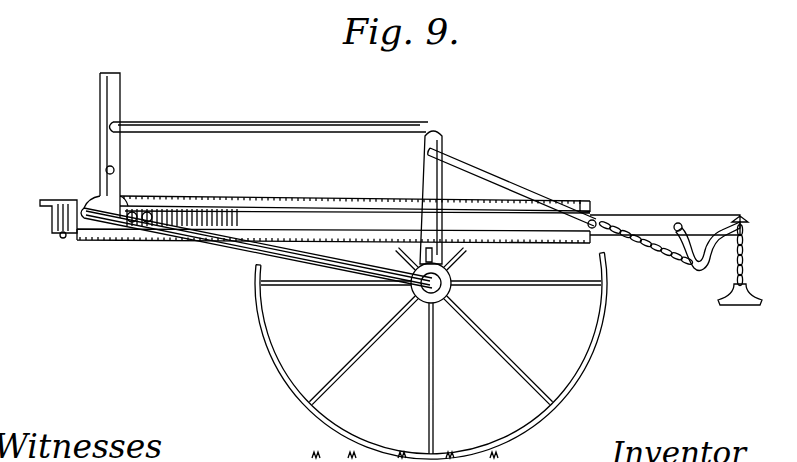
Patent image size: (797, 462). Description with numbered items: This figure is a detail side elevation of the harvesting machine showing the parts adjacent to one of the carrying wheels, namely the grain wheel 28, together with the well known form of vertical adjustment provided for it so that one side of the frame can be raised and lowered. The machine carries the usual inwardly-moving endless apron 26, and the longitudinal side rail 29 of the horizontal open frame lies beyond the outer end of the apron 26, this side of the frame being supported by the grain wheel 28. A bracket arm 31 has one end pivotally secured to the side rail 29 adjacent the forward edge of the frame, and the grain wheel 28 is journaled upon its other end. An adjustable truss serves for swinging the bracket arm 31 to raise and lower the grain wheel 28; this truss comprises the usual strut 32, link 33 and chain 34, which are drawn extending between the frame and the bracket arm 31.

The endless apron 26 is at (290, 192).
The grain wheel 28 is at (594, 358).
The longitudinal side rail 29 is at (333, 212).
The bracket arm 31 is at (213, 247).
The strut 32 is at (422, 183).
The link 33 is at (265, 128).
The chain 34 is at (618, 232).